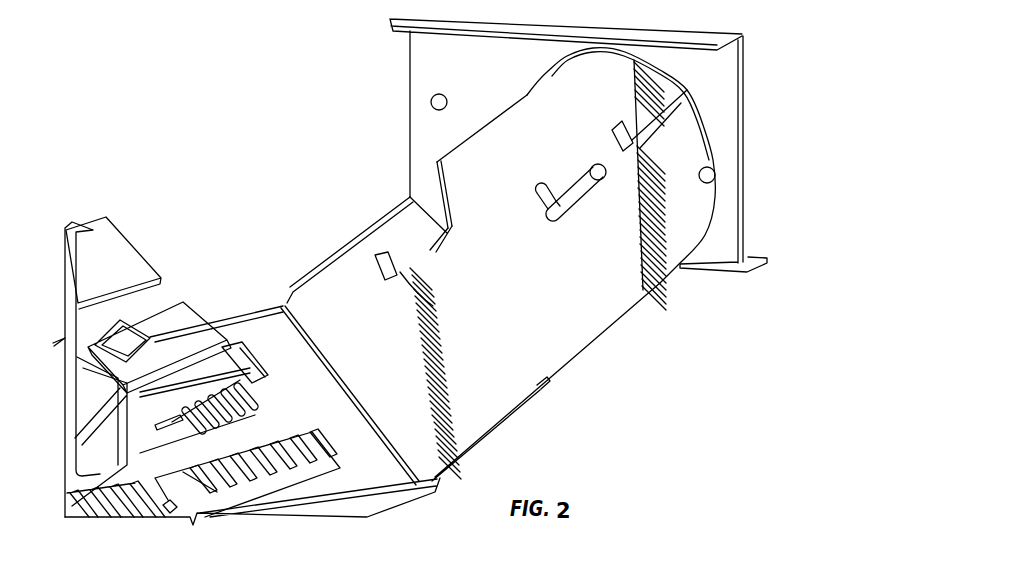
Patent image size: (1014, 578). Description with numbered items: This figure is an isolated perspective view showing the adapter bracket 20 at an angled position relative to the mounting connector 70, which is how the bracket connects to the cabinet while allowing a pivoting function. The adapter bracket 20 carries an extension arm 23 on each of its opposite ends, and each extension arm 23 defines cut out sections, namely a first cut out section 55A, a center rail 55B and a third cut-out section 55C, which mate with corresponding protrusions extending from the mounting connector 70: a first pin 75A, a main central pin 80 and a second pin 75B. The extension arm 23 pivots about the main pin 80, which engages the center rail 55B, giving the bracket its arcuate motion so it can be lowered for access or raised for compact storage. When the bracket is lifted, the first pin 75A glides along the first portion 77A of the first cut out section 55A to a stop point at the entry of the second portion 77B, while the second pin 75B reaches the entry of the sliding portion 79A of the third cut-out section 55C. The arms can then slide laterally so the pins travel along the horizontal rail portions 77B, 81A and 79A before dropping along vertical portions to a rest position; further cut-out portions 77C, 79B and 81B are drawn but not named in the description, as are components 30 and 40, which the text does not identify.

The adapter bracket 20 is at (210, 422).
The extension arm 23 is at (620, 322).
The mounting bracket 30 is at (118, 271).
The ramp plate 40 is at (345, 492).
The first cut out section 55A is at (413, 307).
The center rail 55B is at (554, 198).
The third cut-out section 55C is at (633, 117).
The mounting connector 70 is at (491, 78).
The first pin 75A is at (431, 104).
The second pin 75B is at (716, 178).
The first portion 77A is at (444, 200).
The second portion 77B is at (428, 258).
The tab 77C is at (383, 278).
The sliding portion 79A is at (674, 106).
The tab stop 79B is at (612, 128).
The main central pin 80 is at (600, 181).
The horizontal rail portion 81A is at (580, 215).
The pin hook 81B is at (545, 210).